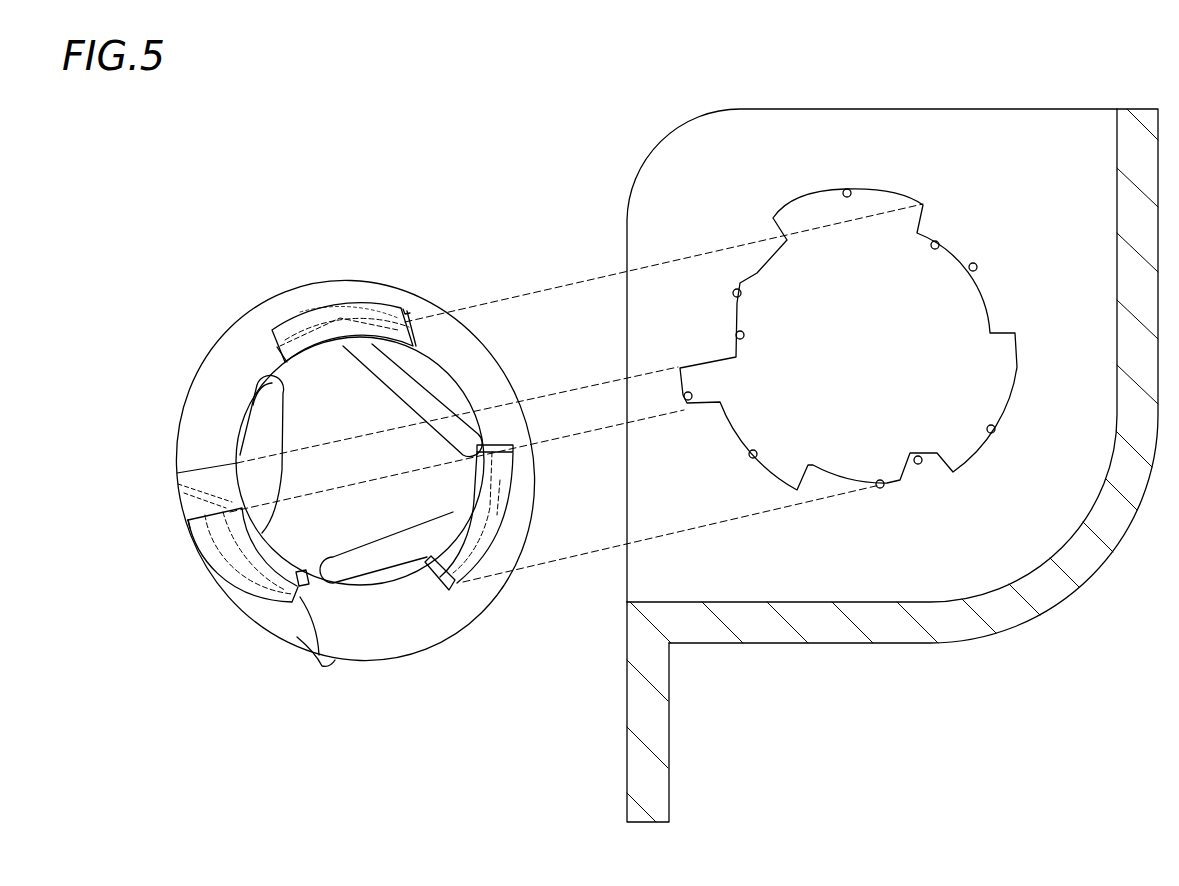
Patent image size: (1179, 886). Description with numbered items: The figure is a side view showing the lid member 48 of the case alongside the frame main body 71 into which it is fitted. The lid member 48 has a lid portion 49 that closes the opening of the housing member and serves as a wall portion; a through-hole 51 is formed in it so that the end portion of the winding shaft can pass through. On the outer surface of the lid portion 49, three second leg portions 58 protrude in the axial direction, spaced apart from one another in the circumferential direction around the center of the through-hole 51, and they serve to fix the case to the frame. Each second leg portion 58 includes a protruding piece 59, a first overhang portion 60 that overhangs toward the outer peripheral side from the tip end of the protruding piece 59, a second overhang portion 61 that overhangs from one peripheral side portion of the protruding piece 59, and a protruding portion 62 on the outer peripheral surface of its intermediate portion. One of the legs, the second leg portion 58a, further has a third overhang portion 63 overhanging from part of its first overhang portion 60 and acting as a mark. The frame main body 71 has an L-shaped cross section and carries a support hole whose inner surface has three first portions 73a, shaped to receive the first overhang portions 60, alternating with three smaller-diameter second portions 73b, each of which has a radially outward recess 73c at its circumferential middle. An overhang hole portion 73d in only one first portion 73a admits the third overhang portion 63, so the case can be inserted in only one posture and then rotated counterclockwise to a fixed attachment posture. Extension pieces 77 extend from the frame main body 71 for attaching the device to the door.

The lid member 48 is at (429, 645).
The lid portion 49 is at (232, 347).
The through-hole 51 is at (258, 398).
The second leg portion 58 is at (280, 318).
The second leg portion 58a is at (320, 666).
The protruding piece 59 is at (311, 322).
The first overhang portion 60 is at (373, 312).
The second overhang portion 61 is at (413, 310).
The protruding portion 62 is at (348, 318).
The third overhang portion 63 is at (185, 514).
The frame main body 71 is at (841, 630).
The first portion 73a is at (846, 189).
The second portion 73b is at (938, 247).
The recess 73c is at (976, 266).
The overhang hole portion 73d is at (684, 397).
The extension piece 77 is at (660, 743).